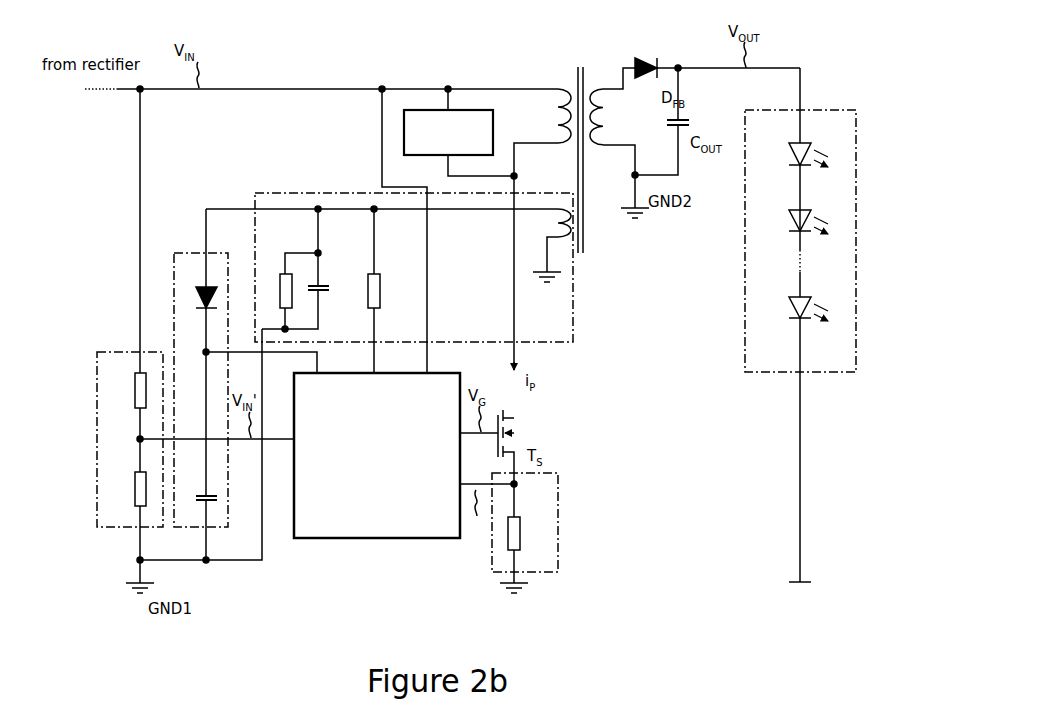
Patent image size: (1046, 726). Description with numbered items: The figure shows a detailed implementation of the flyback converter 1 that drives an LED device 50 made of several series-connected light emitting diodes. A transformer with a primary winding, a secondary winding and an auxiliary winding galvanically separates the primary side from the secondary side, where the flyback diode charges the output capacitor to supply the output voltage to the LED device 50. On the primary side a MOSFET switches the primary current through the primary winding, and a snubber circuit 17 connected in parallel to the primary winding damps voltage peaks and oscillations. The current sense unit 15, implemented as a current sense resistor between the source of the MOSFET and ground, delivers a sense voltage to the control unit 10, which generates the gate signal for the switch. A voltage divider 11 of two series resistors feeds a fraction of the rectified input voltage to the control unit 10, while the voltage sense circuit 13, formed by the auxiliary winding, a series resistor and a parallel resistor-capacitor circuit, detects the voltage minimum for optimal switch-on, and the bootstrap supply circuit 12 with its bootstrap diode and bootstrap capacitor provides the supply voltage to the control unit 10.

The flyback converter 1 is at (512, 57).
The control unit 10 is at (377, 467).
The voltage divider 11 is at (122, 439).
The bootstrap supply circuit 12 is at (234, 376).
The voltage sense circuit 13 is at (292, 194).
The current sense unit 15 is at (544, 544).
The snubber circuit 17 is at (460, 134).
The LED device 50 is at (768, 326).